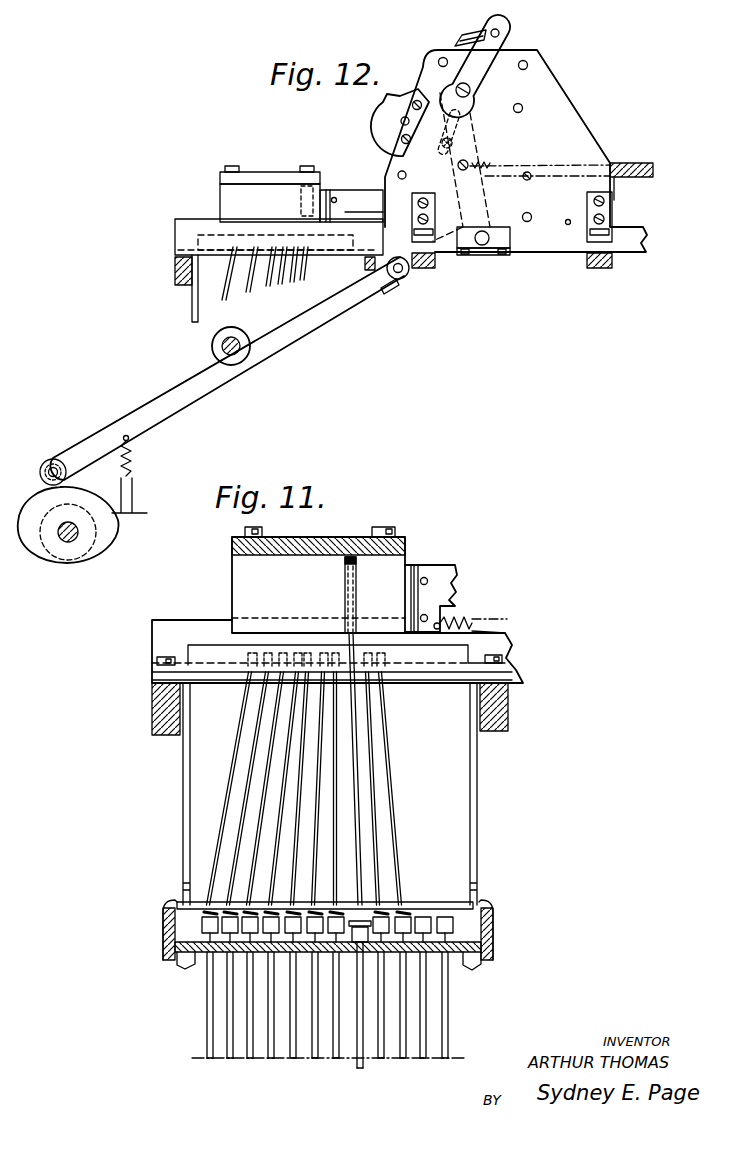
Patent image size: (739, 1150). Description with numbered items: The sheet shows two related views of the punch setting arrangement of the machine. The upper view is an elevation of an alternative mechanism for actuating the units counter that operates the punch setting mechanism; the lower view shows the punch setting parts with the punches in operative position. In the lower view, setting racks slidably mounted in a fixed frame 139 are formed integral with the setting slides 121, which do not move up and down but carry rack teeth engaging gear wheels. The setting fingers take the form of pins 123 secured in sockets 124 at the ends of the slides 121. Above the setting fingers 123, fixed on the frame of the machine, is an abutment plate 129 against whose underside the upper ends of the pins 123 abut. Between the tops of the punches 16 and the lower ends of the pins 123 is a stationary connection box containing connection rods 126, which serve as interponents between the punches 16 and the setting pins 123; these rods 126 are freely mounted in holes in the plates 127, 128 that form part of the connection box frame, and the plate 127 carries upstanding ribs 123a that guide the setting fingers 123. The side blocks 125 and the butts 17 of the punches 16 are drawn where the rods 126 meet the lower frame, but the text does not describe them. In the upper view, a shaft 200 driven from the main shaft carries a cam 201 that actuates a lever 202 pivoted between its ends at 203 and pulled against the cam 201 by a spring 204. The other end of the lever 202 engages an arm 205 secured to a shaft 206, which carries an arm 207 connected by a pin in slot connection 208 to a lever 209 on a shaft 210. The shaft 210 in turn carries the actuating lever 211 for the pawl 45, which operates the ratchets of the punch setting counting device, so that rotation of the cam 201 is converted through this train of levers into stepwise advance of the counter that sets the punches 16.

In FIG. 11, the punches 16 is at (232, 1019).
In FIG. 11, the needle butts / jacks 17 is at (455, 923).
In FIG. 12, the pawl 45 is at (470, 34).
In FIG. 12, the setting slides 121 is at (355, 192).
In FIG. 11, the setting slides 121 is at (442, 585).
In FIG. 12, the setting fingers (pins) 123 is at (300, 230).
In FIG. 11, the setting fingers (pins) 123 is at (347, 637).
In FIG. 11, the upstanding ribs 123a is at (203, 652).
In FIG. 11, the sockets 124 is at (343, 587).
In FIG. 12, the side guide blocks 125 is at (176, 268).
In FIG. 11, the side guide blocks 125 is at (152, 735).
In FIG. 12, the connection rods 126 is at (230, 305).
In FIG. 11, the connection rods 126 is at (397, 806).
In FIG. 11, the plate 127 is at (162, 668).
In FIG. 11, the plate 128 is at (427, 898).
In FIG. 12, the abutment plate 129 is at (277, 178).
In FIG. 11, the abutment plate 129 is at (335, 535).
In FIG. 12, the fixed frame 139 is at (576, 119).
In FIG. 12, the shaft 200 is at (80, 537).
In FIG. 12, the cam 201 is at (149, 513).
In FIG. 12, the lever 202 is at (125, 413).
In FIG. 12, the pivot 203 is at (249, 353).
In FIG. 12, the spring 204 is at (133, 477).
In FIG. 12, the arm 205 is at (446, 262).
In FIG. 12, the shaft 206 is at (485, 244).
In FIG. 12, the arm 207 is at (473, 211).
In FIG. 12, the pin in slot connection 208 is at (455, 145).
In FIG. 12, the lever 209 is at (463, 120).
In FIG. 12, the shaft 210 is at (471, 90).
In FIG. 12, the actuating lever 211 is at (480, 65).